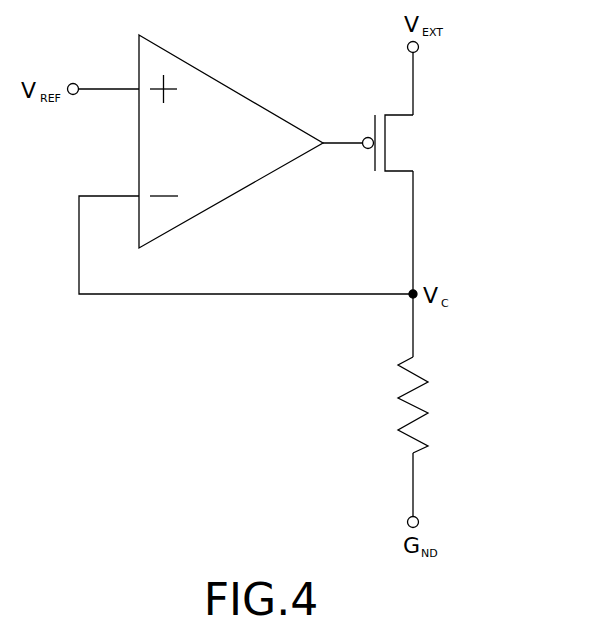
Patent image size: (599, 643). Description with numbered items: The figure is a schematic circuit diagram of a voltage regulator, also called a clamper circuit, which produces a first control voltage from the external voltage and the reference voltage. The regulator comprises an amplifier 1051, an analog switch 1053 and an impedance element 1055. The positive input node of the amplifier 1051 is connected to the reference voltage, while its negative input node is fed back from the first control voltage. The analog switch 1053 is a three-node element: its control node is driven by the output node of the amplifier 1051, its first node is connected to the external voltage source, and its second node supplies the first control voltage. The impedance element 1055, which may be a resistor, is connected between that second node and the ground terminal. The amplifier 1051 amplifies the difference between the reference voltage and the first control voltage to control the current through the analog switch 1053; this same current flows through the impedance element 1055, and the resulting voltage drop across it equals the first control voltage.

The amplifier 1051 is at (230, 90).
The analog switch 1053 is at (416, 147).
The impedance element 1055 is at (438, 410).